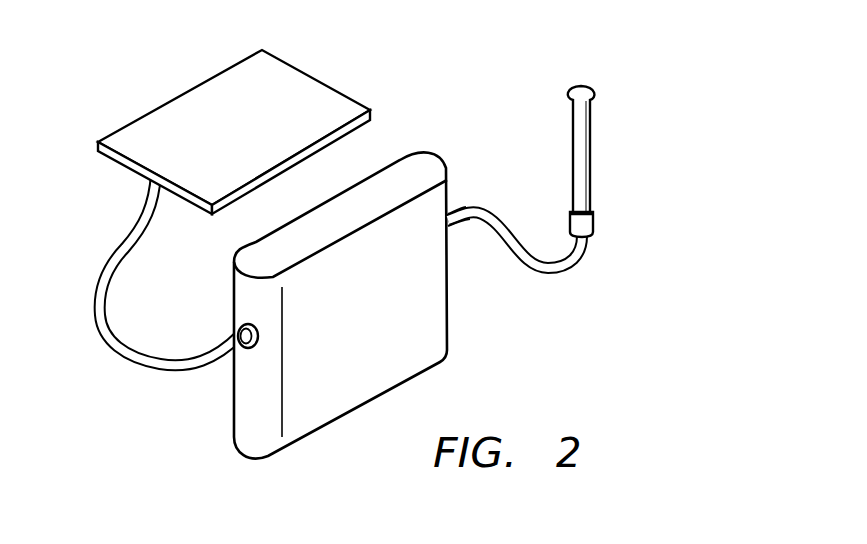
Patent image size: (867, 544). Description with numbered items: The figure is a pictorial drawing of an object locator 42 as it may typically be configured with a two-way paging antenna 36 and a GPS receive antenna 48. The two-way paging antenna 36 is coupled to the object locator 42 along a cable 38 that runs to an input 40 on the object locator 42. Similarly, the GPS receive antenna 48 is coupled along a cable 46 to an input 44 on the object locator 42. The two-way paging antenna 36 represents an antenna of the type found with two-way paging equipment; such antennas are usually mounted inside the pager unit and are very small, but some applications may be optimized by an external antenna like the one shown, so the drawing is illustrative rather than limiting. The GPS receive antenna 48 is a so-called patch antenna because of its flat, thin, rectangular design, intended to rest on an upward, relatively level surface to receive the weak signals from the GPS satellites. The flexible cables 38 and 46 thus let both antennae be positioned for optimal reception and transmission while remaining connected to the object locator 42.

The two-way paging antenna 36 is at (577, 154).
The cable 38 is at (542, 272).
The input 40 is at (450, 228).
The object locator 42 is at (428, 162).
The input 44 is at (240, 328).
The cable 46 is at (115, 255).
The GPS receive antenna 48 is at (303, 87).